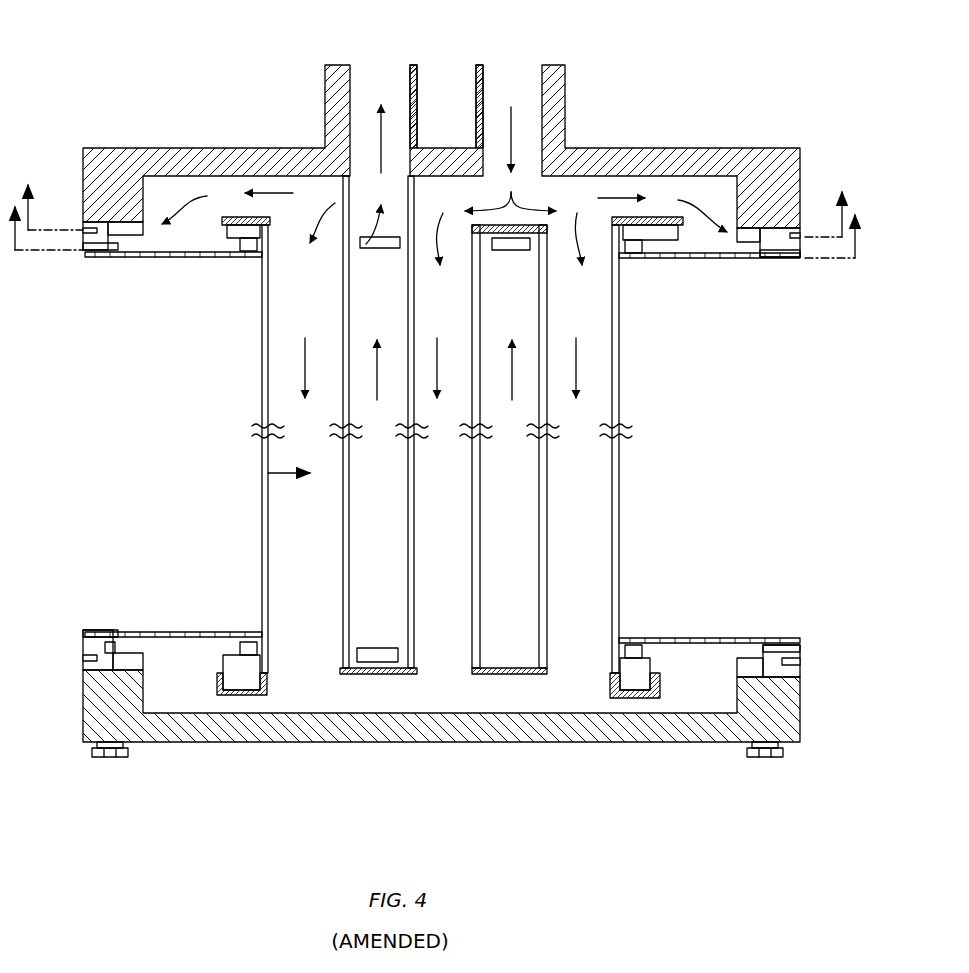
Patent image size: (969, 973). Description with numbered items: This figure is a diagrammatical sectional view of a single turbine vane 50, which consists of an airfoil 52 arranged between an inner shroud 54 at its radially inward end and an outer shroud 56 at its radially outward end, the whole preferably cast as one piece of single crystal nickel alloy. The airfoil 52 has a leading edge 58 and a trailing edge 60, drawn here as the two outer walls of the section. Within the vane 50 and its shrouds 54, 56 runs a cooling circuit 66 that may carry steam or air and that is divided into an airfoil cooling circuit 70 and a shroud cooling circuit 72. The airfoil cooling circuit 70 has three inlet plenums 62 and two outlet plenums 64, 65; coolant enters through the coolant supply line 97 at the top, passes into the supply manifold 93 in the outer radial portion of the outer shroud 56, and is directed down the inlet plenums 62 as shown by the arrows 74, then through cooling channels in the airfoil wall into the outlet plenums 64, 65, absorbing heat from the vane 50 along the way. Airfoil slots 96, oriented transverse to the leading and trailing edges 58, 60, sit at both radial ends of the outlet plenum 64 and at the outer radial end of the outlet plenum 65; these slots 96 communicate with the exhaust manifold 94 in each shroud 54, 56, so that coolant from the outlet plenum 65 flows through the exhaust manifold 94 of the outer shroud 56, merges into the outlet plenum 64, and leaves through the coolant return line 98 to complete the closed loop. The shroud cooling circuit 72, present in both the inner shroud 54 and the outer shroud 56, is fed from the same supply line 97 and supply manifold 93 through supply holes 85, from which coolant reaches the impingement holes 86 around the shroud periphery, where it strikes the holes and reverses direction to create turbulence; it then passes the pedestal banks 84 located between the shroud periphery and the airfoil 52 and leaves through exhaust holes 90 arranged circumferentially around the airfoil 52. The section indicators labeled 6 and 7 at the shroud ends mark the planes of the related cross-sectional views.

The vane 50 is at (103, 113).
The airfoil 52 is at (440, 449).
The inner shroud 54 is at (765, 725).
The outer shroud 56 is at (83, 163).
The leading edge 58 is at (262, 545).
The trailing edge 60 is at (619, 517).
The inlet plenums 62 is at (438, 364).
The outlet plenum 64 is at (378, 425).
The outlet plenum 65 is at (509, 449).
The cooling circuit 66 is at (614, 146).
The airfoil cooling circuit 70 is at (262, 473).
The shroud cooling circuit 72 is at (83, 272).
The arrow 74 is at (307, 360).
The pedestal banks 84 is at (104, 258).
The supply holes 85 is at (115, 240).
The impingement holes 86 is at (88, 250).
The exhaust holes 90 is at (250, 225).
The supply manifold 93 is at (170, 190).
The exhaust manifold 94 is at (243, 232).
The airfoil slots 96 is at (392, 249).
The coolant supply line 97 is at (503, 83).
The coolant return line 98 is at (372, 82).
The section line 6 is at (435, 211).
The section line 7 is at (432, 246).